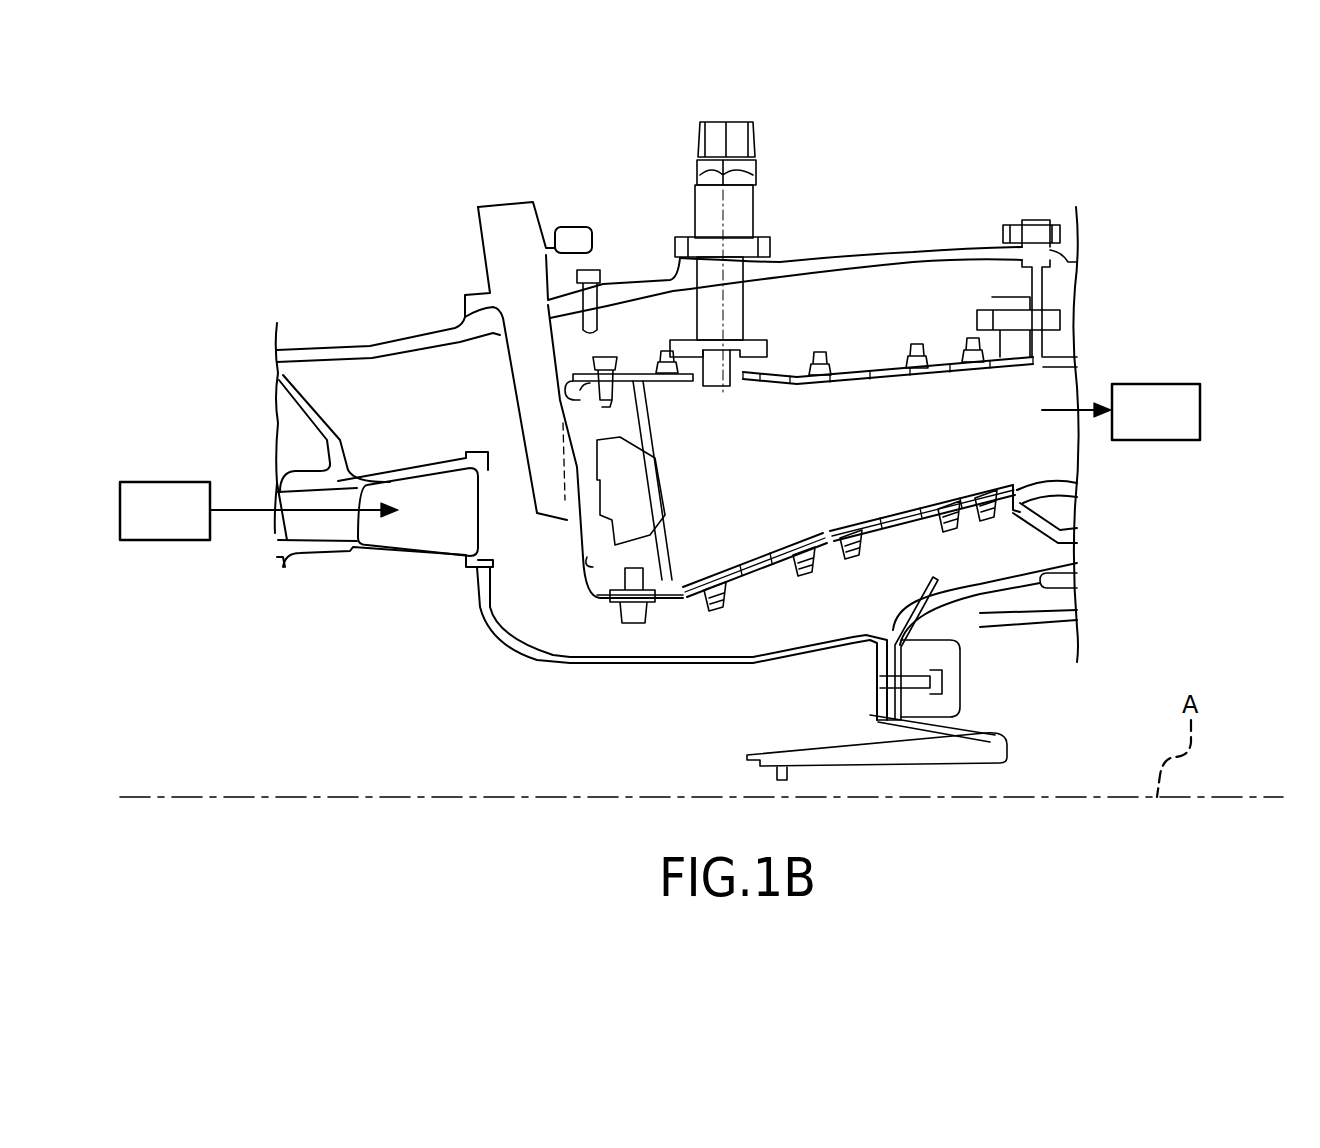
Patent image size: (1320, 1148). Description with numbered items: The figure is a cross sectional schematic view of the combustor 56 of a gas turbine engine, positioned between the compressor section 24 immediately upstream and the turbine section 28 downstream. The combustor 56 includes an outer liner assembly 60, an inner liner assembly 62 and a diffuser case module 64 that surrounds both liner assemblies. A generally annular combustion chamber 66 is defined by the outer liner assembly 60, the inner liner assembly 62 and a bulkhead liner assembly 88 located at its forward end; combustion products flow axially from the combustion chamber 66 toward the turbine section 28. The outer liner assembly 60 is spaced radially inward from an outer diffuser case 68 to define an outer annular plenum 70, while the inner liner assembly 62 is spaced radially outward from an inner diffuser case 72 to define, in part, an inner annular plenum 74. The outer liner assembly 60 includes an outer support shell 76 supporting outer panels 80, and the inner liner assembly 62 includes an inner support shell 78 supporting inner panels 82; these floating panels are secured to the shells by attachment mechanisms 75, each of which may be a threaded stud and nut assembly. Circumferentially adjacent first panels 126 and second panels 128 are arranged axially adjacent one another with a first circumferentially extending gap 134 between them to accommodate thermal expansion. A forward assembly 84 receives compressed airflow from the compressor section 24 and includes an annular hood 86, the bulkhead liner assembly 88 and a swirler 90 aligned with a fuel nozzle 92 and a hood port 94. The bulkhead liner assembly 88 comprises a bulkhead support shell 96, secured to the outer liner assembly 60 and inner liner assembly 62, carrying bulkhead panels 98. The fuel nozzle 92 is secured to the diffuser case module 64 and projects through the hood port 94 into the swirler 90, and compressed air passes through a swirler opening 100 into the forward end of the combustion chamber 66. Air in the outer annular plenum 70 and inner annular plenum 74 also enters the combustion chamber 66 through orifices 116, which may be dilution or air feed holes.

The compressor section 24 is at (180, 524).
The turbine section 28 is at (1172, 425).
The combustor 56 is at (973, 185).
The outer liner assembly 60 is at (880, 353).
The inner liner assembly 62 is at (833, 570).
The diffuser case module 64 is at (915, 250).
The combustion chamber 66 is at (900, 455).
The outer diffuser case 68 is at (798, 258).
The outer annular plenum 70 is at (808, 316).
The inner diffuser case 72 is at (645, 672).
The inner annular plenum 74 is at (790, 639).
The attachment mechanism 75 is at (995, 511).
The outer support shell 76 is at (373, 345).
The inner support shell 78 is at (908, 535).
The outer panel 80 is at (437, 330).
The inner panel 82 is at (748, 571).
The forward assembly 84 is at (570, 615).
The annular hood 86 is at (580, 565).
The bulkhead liner assembly 88 is at (678, 430).
The swirler 90 is at (660, 512).
The fuel nozzle 92 is at (538, 292).
The hood port 94 is at (585, 553).
The bulkhead support shell 96 is at (595, 587).
The bulkhead panel 98 is at (670, 548).
The swirler opening 100 is at (660, 464).
The orifice 116 is at (882, 375).
The first panel 126 is at (787, 383).
The second panel 128 is at (893, 372).
The first circumferentially extending gap 134 is at (798, 380).